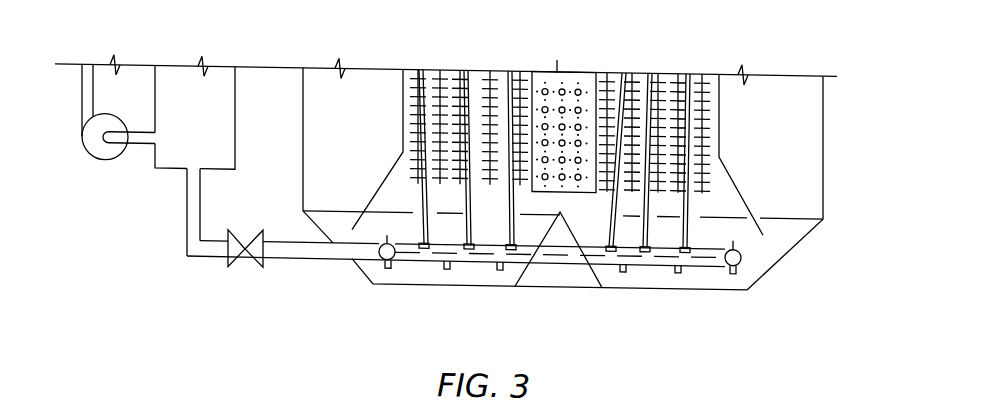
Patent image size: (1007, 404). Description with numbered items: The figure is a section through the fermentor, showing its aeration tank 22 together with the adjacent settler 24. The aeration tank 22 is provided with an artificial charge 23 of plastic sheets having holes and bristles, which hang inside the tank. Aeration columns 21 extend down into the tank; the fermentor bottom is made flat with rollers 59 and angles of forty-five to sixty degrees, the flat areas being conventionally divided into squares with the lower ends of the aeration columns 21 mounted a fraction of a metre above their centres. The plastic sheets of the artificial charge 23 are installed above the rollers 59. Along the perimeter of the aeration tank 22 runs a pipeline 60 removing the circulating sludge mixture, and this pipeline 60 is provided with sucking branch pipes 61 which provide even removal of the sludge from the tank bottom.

The aeration columns 21 is at (485, 60).
The aeration tank 22 is at (417, 278).
The artificial charge 23 is at (532, 84).
The settler 24 is at (805, 142).
The rollers 59 is at (565, 271).
The pipeline removing the circulating sludge mixture 60 is at (742, 250).
The sucking branch pipes 61 is at (623, 265).